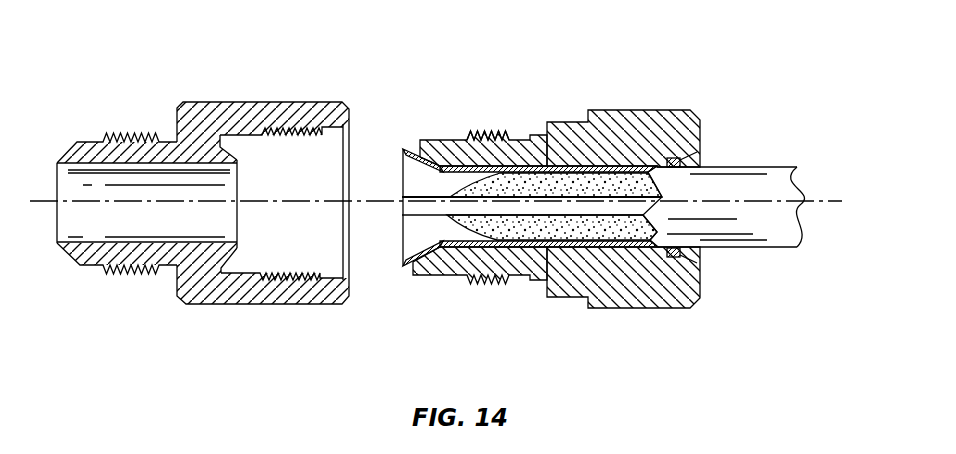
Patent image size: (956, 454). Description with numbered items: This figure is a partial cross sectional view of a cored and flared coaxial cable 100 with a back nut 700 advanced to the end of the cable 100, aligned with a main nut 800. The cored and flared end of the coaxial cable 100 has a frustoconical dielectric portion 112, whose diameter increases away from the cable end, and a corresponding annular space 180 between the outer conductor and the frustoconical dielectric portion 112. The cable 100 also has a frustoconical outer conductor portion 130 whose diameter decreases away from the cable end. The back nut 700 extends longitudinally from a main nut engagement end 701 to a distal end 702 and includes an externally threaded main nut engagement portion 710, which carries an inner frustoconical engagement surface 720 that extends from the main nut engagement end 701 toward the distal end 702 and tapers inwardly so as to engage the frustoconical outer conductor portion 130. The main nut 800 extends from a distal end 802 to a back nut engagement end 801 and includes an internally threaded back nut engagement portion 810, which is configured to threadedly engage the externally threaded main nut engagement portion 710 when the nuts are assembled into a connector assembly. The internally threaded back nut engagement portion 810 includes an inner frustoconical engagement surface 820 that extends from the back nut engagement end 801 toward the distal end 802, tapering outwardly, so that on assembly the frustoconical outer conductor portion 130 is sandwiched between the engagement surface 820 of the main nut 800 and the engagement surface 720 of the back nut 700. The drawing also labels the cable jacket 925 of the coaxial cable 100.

The main nut 800 is at (166, 62).
The back nut engagement end 801 is at (323, 112).
The distal end 802 is at (66, 153).
The internally threaded back nut engagement portion 810 is at (318, 148).
The inner frustoconical engagement surface 820 is at (232, 250).
The back nut 700 is at (622, 88).
The main nut engagement end 701 is at (421, 140).
The distal end 702 is at (667, 120).
The externally threaded main nut engagement portion 710 is at (485, 140).
The inner frustoconical engagement surface 720 is at (428, 255).
The frustoconical outer conductor portion 130 is at (403, 267).
The annular space 180 is at (445, 186).
The frustoconical dielectric portion 112 is at (455, 190).
The coaxial cable 100 is at (766, 142).
The cable jacket 925 is at (817, 198).